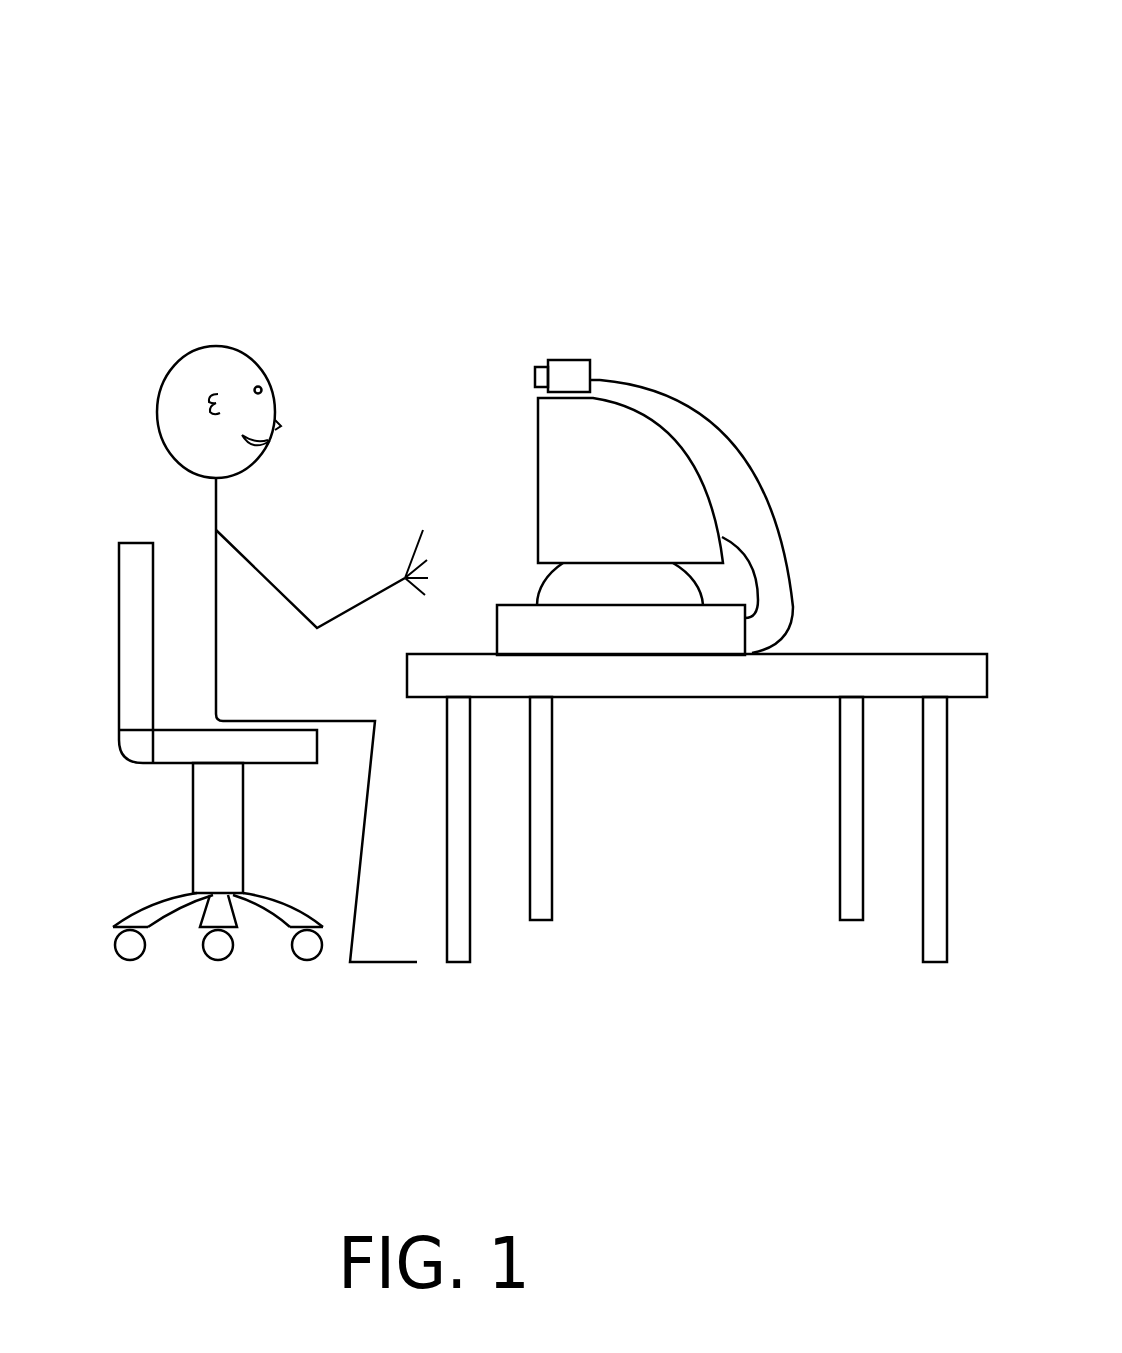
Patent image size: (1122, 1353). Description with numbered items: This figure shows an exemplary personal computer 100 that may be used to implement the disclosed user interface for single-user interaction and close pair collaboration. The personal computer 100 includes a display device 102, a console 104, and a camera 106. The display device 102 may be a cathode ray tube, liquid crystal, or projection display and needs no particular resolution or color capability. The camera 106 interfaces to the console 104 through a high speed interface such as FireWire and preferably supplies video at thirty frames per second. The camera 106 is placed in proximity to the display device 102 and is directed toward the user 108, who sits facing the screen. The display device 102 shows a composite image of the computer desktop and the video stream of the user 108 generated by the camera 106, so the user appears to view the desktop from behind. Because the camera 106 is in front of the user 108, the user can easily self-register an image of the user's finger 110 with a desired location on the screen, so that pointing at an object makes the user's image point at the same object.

The personal computer 100 is at (648, 210).
The display device 102 is at (645, 485).
The console 104 is at (722, 637).
The camera 106 is at (563, 373).
The user 108 is at (165, 377).
The finger 110 is at (415, 540).